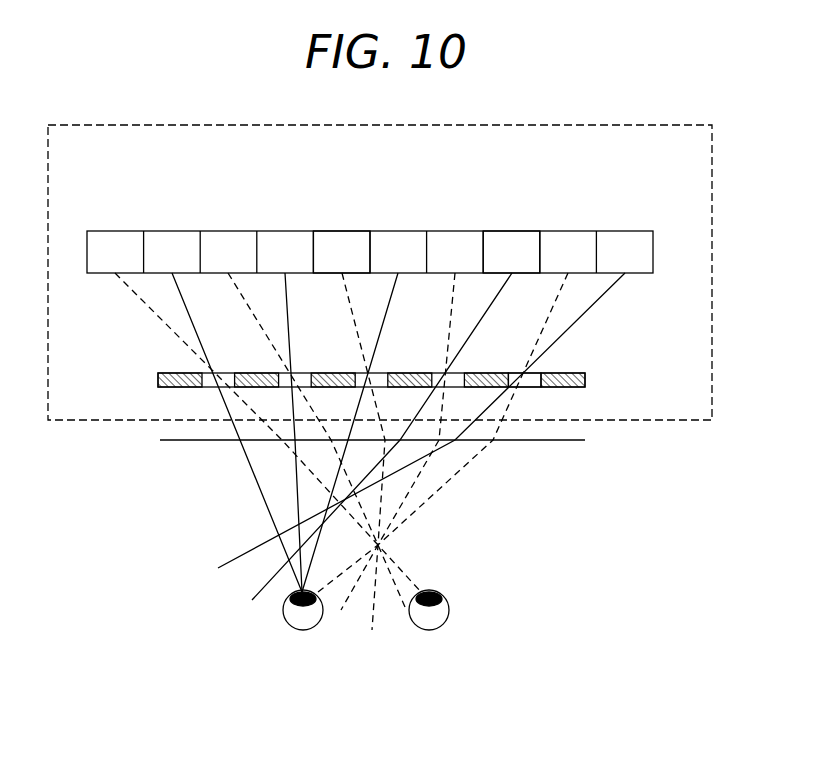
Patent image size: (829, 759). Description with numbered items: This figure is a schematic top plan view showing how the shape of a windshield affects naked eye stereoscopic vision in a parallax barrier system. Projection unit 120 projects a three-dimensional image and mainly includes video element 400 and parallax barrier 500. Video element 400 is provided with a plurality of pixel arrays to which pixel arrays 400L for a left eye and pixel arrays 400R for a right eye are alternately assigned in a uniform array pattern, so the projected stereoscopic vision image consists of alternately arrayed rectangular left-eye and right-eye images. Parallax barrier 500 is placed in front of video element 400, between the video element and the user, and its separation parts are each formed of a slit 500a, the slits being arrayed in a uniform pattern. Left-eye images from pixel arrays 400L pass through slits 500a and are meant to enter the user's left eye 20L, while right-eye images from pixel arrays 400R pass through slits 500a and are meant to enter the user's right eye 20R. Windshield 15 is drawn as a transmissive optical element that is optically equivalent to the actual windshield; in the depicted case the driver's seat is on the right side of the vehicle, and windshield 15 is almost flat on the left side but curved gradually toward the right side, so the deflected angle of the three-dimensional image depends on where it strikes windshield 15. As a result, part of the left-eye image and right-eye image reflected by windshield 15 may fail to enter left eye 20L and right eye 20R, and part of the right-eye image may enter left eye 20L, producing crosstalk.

The projection unit 120 is at (663, 125).
The video element 400 is at (646, 232).
The pixel arrays for a right eye 400R is at (352, 241).
The pixel arrays for a left eye 400L is at (517, 241).
The parallax barrier 500 is at (586, 379).
The slit 500a is at (532, 388).
The windshield 15 is at (565, 442).
The left eye 20L is at (303, 631).
The right eye 20R is at (429, 631).